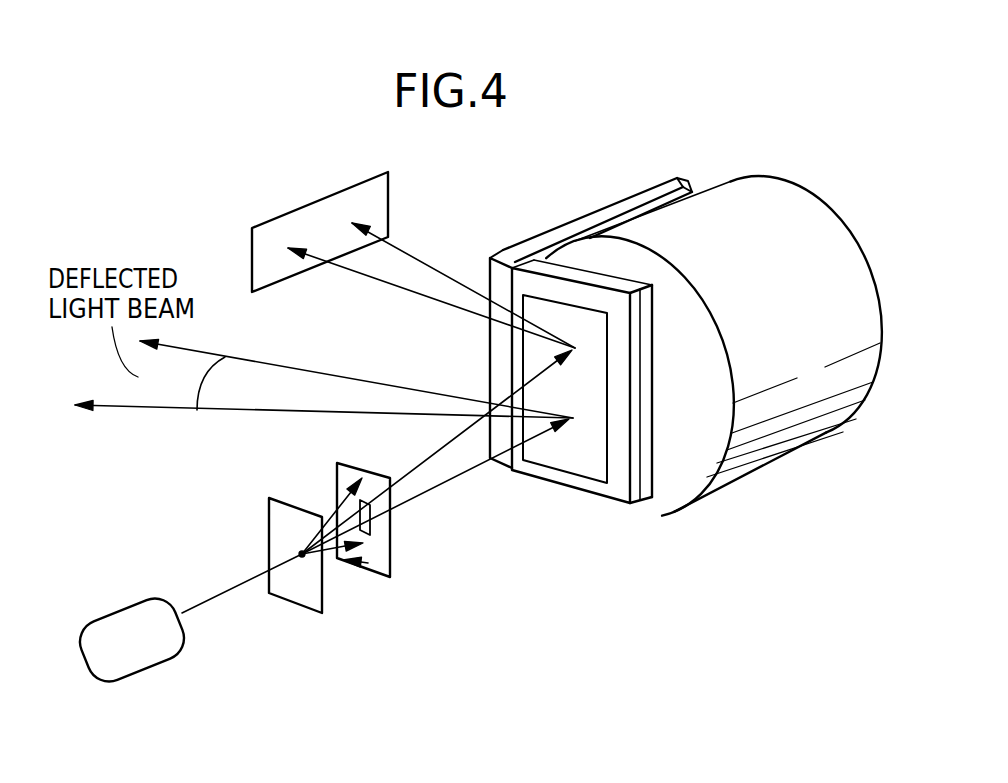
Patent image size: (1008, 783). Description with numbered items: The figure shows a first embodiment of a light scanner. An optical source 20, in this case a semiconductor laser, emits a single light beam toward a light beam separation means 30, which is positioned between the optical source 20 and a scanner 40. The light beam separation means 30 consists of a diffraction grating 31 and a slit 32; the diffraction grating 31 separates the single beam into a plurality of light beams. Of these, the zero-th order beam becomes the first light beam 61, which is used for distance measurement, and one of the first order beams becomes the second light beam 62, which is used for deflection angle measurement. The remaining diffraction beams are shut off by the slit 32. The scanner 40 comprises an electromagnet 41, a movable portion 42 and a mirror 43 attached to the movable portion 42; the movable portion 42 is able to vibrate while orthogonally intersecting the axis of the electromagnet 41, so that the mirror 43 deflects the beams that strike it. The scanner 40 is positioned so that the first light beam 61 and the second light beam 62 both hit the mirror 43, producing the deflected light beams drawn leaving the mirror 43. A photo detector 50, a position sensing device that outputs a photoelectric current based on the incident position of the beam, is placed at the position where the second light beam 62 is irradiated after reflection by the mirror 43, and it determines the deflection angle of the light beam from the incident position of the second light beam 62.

The optical source 20 is at (148, 673).
The light beam separation means 30 is at (347, 570).
The diffraction grating 31 is at (303, 610).
The slit 32 is at (337, 482).
The scanner 40 is at (714, 343).
The electromagnet 41 is at (822, 215).
The movable portion 42 is at (582, 373).
The mirror 43 is at (538, 307).
The photo detector 50 is at (270, 220).
The first light beam 61 is at (472, 472).
The second light beam 62 is at (435, 450).